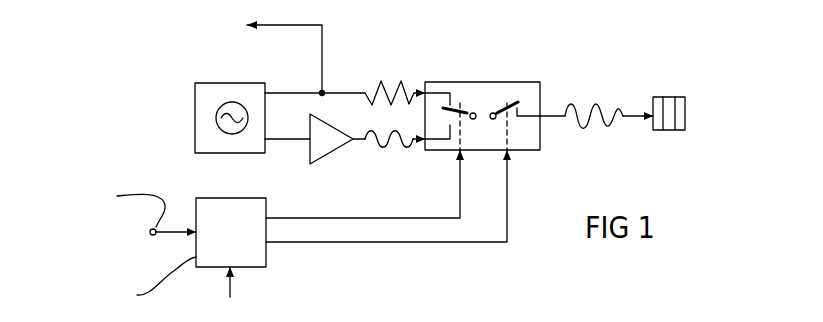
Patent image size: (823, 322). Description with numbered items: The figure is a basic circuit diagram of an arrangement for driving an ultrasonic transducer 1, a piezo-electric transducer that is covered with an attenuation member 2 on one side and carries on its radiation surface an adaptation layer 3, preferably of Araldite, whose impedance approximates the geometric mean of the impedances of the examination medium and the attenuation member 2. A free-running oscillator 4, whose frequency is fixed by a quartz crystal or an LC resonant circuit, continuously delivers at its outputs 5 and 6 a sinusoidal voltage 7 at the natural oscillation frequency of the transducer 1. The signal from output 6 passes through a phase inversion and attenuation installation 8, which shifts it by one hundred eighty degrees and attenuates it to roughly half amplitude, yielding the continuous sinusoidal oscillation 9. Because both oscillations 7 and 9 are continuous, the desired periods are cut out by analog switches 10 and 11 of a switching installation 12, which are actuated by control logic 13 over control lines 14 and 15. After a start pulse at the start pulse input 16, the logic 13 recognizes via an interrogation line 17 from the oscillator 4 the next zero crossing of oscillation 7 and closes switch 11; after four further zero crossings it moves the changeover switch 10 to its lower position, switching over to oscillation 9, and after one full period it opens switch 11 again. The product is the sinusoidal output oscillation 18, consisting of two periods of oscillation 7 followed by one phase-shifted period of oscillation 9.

The ultrasonic transducer 1 is at (669, 97).
The attenuation member 2 is at (659, 97).
The n·λ/4 adaptation layer 3 is at (682, 131).
The oscillator 4 is at (195, 120).
The output of oscillator 5 is at (282, 93).
The output of oscillator 6 is at (292, 141).
The sinusoidal voltage 7 is at (368, 92).
The phase inversion and attenuation installation 8 is at (322, 158).
The sinusoidal oscillation 9 is at (375, 147).
The analog changeover switch 10 is at (461, 111).
The analog switch 11 is at (512, 102).
The switching installation 12 is at (521, 151).
The control logic 13 is at (262, 210).
The control line 14 is at (349, 218).
The control line 15 is at (349, 244).
The start pulse input 16 is at (171, 245).
The interrogation line 17 is at (306, 24).
The sinusoidal output oscillation 18 is at (589, 100).